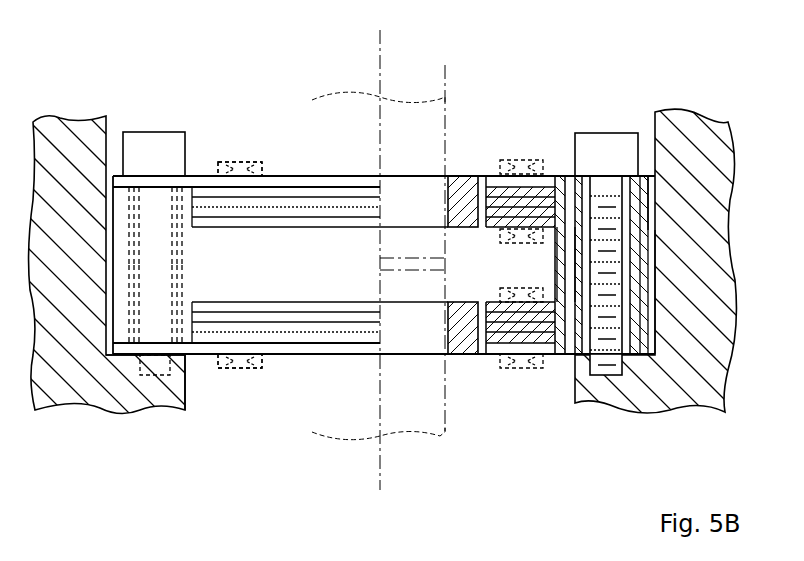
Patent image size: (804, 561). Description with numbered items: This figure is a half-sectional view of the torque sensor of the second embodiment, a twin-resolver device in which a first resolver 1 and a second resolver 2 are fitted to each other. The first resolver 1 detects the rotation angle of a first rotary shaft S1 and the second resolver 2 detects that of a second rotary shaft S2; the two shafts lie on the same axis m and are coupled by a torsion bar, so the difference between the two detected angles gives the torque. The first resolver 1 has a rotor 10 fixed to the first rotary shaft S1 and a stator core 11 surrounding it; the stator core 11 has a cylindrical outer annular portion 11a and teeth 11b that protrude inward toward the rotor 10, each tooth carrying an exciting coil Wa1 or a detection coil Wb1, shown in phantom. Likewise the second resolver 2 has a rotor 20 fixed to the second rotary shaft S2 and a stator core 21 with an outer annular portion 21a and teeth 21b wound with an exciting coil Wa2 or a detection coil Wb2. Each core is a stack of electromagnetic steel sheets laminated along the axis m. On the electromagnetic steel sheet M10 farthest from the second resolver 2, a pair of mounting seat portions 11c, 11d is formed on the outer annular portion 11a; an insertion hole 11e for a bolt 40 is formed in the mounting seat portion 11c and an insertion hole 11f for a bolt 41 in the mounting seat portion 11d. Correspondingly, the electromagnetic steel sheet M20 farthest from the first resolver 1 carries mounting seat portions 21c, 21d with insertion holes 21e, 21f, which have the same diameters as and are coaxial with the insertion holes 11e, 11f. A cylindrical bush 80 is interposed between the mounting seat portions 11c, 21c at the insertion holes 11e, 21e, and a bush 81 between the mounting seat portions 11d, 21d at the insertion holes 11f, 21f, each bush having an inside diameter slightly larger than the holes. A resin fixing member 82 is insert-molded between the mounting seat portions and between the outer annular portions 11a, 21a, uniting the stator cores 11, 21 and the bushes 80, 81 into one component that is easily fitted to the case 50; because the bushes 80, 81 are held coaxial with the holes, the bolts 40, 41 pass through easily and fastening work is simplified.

The first resolver 1 is at (538, 70).
The second resolver 2 is at (538, 466).
The rotor 10 is at (480, 200).
The rotor 20 is at (470, 356).
The stator core 11 is at (342, 174).
The stator core 21 is at (356, 357).
The outer annular portion 11a is at (560, 186).
The outer annular portion 21a is at (550, 360).
The teeth 11b is at (481, 228).
The teeth 21b is at (481, 302).
The mounting seat portion 11c is at (655, 160).
The mounting seat portion 21c is at (640, 390).
The mounting seat portion 11d is at (113, 185).
The mounting seat portion 21d is at (98, 405).
The insertion hole 11e is at (595, 175).
The insertion hole 21e is at (583, 388).
The insertion hole 11f is at (158, 172).
The insertion hole 21f is at (163, 377).
The bolt 40 is at (608, 133).
The bolt 41 is at (150, 131).
The case 50 is at (724, 212).
The bush 80 is at (650, 280).
The bush 81 is at (104, 285).
The fixing member 82 is at (266, 257).
The electromagnetic steel sheet M10 is at (515, 178).
The electromagnetic steel sheet M20 is at (504, 354).
The exciting coil Wa1 is at (240, 162).
The detection coil Wb1 is at (255, 136).
The exciting coil Wa2 is at (240, 368).
The detection coil Wb2 is at (251, 410).
The first rotary shaft S1 is at (445, 98).
The second rotary shaft S2 is at (446, 437).
The axis m is at (380, 76).